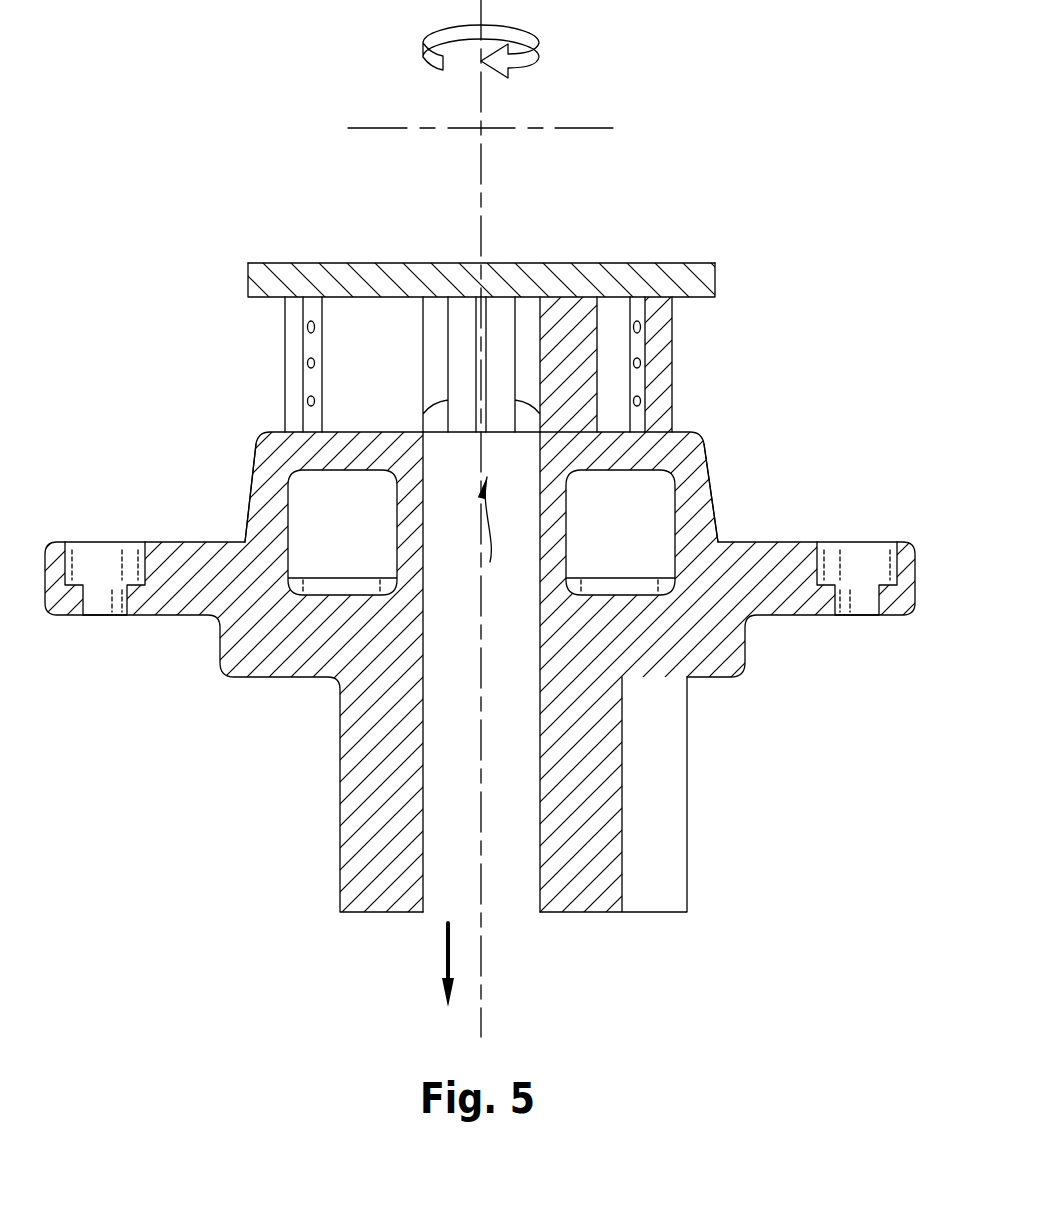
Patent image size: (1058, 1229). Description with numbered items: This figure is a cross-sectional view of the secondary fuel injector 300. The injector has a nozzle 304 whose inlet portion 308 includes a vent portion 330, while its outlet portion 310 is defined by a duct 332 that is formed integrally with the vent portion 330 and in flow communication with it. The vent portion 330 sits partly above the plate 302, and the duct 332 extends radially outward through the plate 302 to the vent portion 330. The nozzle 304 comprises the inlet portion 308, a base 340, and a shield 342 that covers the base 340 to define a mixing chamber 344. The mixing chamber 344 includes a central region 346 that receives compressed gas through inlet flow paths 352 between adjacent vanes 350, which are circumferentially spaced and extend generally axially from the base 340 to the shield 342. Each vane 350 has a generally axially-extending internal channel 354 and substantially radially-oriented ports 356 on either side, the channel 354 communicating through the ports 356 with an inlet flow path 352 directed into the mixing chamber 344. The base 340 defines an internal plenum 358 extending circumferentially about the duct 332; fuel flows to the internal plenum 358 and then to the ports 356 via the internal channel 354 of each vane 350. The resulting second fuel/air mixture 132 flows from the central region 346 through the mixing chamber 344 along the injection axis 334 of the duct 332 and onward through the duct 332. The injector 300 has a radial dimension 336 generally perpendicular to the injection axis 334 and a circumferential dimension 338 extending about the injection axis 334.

The second fuel/air mixture 132 is at (446, 952).
The secondary fuel injector 300 is at (118, 246).
The plate 302 is at (892, 527).
The nozzle 304 is at (266, 322).
The inlet portion 308 is at (728, 235).
The outlet portion 310 is at (707, 897).
The vent portion 330 is at (175, 352).
The duct 332 is at (455, 703).
The injection axis 334 is at (482, 1000).
The radial dimension 336 is at (568, 128).
The circumferential dimension 338 is at (539, 44).
The base 340 is at (718, 507).
The shield 342 is at (622, 263).
The mixing chamber 344 is at (488, 535).
The central region 346 is at (433, 328).
The vane 350 is at (303, 357).
The inlet flow path 352 is at (352, 348).
The internal channel 354 is at (617, 359).
The port 356 is at (306, 401).
The internal plenum 358 is at (365, 541).